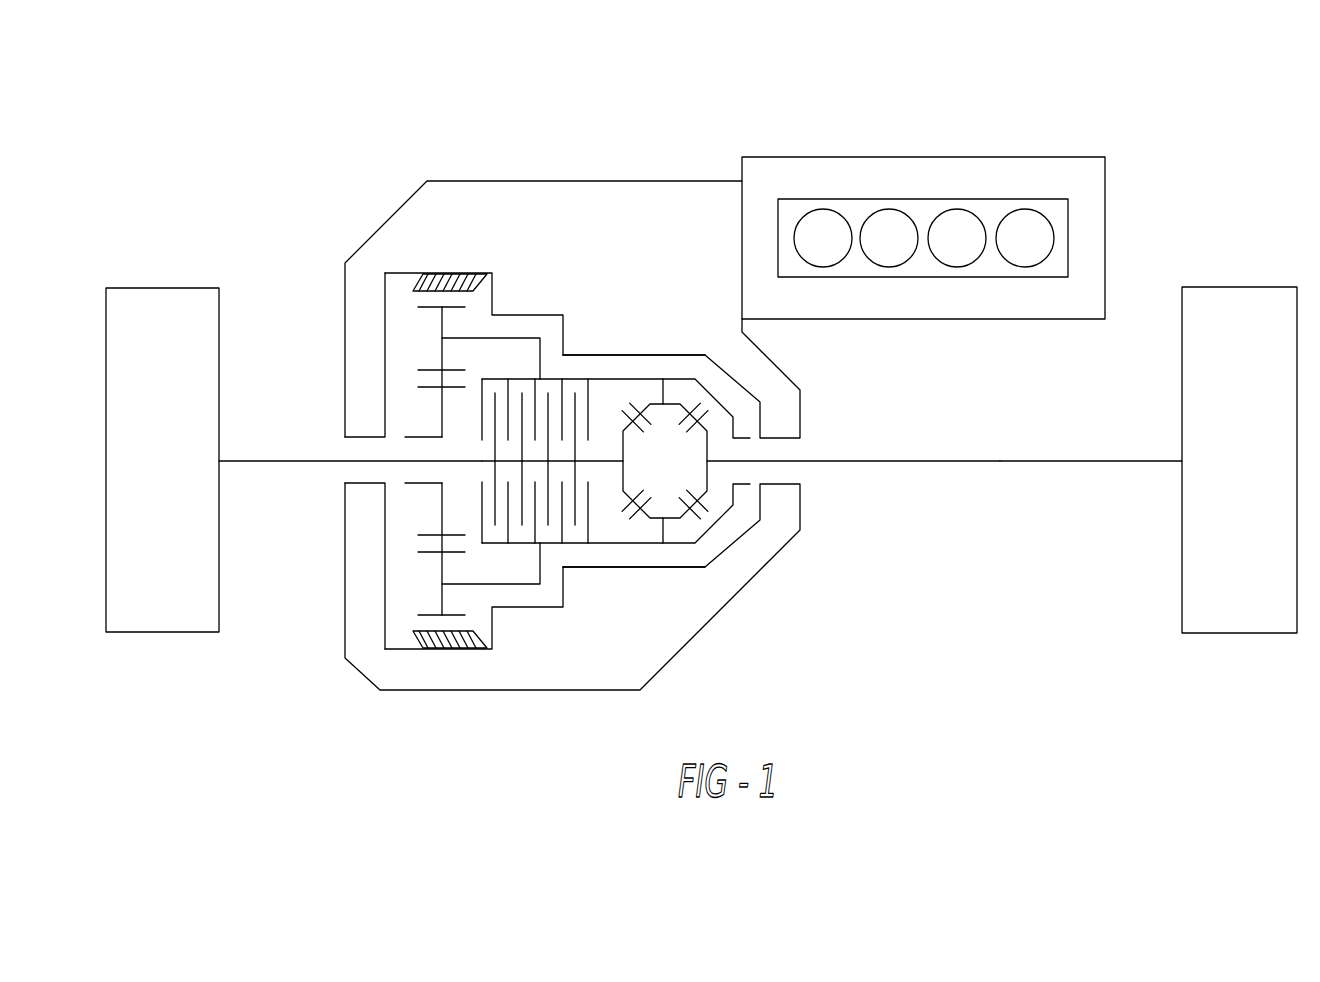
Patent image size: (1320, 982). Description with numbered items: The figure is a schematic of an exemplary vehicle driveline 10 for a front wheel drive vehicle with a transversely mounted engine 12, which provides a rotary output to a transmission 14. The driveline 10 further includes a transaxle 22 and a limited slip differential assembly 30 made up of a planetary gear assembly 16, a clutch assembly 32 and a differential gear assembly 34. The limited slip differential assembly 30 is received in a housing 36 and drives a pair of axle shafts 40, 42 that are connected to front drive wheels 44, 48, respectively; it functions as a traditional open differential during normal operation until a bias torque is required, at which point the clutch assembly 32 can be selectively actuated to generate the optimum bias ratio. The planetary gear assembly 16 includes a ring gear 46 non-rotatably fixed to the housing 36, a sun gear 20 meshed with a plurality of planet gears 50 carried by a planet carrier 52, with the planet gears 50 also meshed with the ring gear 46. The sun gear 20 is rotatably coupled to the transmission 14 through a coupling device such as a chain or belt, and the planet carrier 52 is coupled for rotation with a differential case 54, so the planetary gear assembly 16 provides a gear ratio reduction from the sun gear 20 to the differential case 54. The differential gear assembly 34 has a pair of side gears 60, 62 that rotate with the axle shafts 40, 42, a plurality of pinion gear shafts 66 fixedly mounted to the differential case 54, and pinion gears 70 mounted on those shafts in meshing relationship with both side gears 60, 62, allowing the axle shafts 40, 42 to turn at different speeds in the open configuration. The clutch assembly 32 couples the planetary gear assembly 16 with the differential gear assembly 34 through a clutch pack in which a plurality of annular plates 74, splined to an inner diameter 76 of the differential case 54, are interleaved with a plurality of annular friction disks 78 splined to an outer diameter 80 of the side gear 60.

The vehicle driveline 10 is at (1207, 159).
The engine 12 is at (913, 167).
The transmission 14 is at (553, 202).
The planetary gear assembly 16 is at (402, 291).
The sun gear 20 is at (442, 413).
The transaxle 22 is at (362, 313).
The limited slip differential assembly 30 is at (628, 371).
The clutch assembly 32 is at (502, 560).
The differential gear assembly 34 is at (732, 387).
The housing 36 is at (597, 357).
The axle shaft 40 is at (269, 463).
The axle shaft 42 is at (977, 463).
The front drive wheel 44 is at (160, 322).
The ring gear 46 is at (452, 274).
The front drive wheel 48 is at (1228, 612).
The planet gears 50 is at (442, 325).
The planet carrier 52 is at (518, 338).
The differential case 54 is at (752, 401).
The side gear 60 is at (619, 481).
The side gear 62 is at (709, 467).
The pinion gear shafts 66 is at (666, 390).
The pinion gears 70 is at (648, 403).
The annular plates 74 is at (509, 528).
The inner diameter 76 is at (522, 384).
The annular friction disks 78 is at (495, 407).
The outer diameter 80 is at (613, 461).